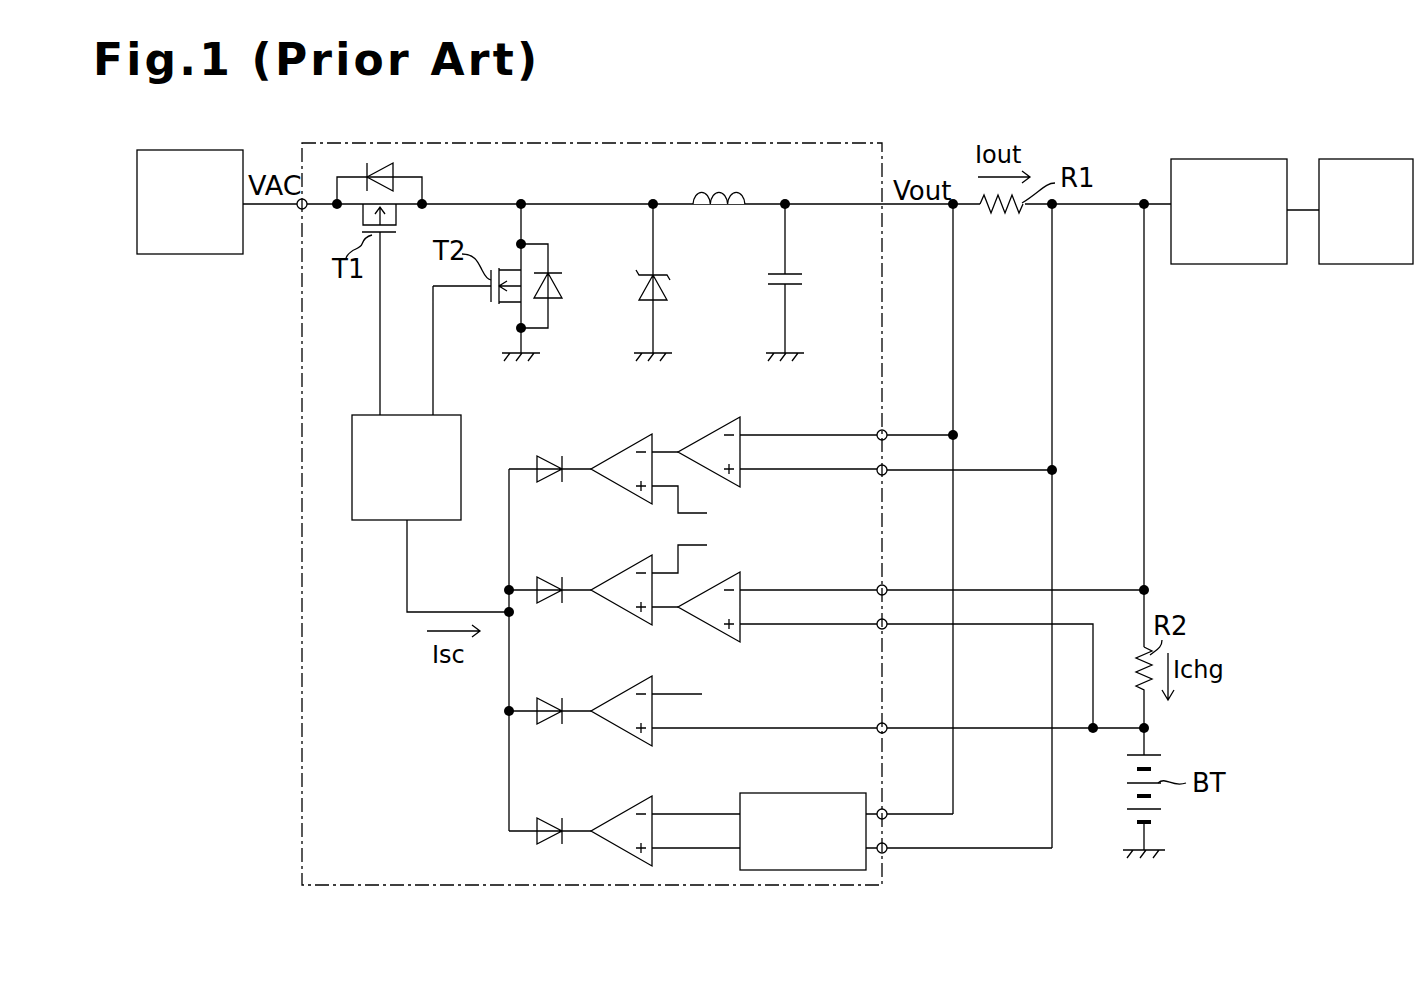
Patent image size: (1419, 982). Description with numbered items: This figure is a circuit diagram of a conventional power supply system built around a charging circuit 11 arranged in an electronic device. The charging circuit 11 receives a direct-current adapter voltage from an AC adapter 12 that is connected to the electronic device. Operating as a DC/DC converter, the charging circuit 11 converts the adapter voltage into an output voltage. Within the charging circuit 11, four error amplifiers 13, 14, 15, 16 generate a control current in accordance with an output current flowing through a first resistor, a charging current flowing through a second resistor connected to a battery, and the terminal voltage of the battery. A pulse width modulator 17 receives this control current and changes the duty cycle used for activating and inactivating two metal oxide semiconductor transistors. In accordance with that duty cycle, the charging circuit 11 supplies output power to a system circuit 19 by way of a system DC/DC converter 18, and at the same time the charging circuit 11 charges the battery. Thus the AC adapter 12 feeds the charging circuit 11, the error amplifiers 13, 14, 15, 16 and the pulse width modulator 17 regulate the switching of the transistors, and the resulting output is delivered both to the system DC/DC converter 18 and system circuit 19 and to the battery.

The charging circuit 11 is at (884, 160).
The AC adapter 12 is at (219, 150).
The error amplifier 13 is at (617, 452).
The error amplifier 14 is at (617, 573).
The error amplifier 15 is at (617, 694).
The error amplifier 16 is at (617, 814).
The pulse width modulator 17 is at (461, 430).
The system DC/DC converter 18 is at (1258, 158).
The system circuit 19 is at (1390, 158).